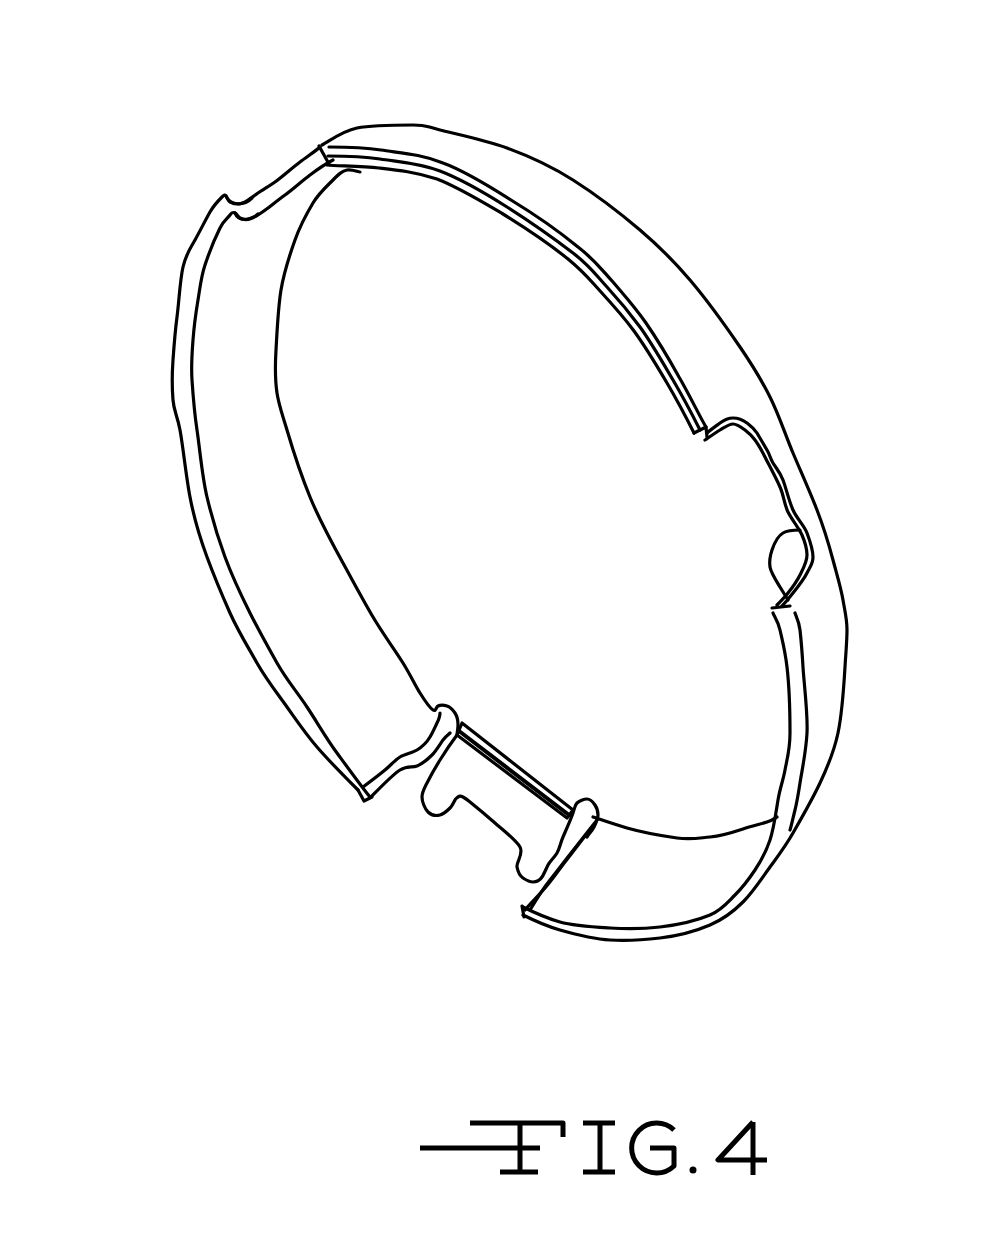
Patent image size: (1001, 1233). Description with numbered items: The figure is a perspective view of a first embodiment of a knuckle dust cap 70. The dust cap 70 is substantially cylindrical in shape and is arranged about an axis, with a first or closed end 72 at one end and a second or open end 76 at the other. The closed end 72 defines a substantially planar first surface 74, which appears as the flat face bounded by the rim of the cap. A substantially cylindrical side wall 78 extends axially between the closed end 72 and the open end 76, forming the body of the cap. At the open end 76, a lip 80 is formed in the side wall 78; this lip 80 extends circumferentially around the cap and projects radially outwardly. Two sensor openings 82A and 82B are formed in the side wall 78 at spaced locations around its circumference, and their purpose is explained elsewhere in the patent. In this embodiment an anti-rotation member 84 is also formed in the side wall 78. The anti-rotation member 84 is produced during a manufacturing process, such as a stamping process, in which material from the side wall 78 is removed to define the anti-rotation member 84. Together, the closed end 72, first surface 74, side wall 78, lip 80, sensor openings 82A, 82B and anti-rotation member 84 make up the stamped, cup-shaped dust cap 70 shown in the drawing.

The dust cap 70 is at (557, 136).
The closed end 72 is at (747, 353).
The first surface 74 is at (504, 507).
The open end 76 is at (657, 942).
The side wall 78 is at (640, 273).
The lip 80 is at (180, 292).
The sensor opening 82A is at (262, 192).
The sensor opening 82B is at (790, 535).
The anti-rotation member 84 is at (488, 797).